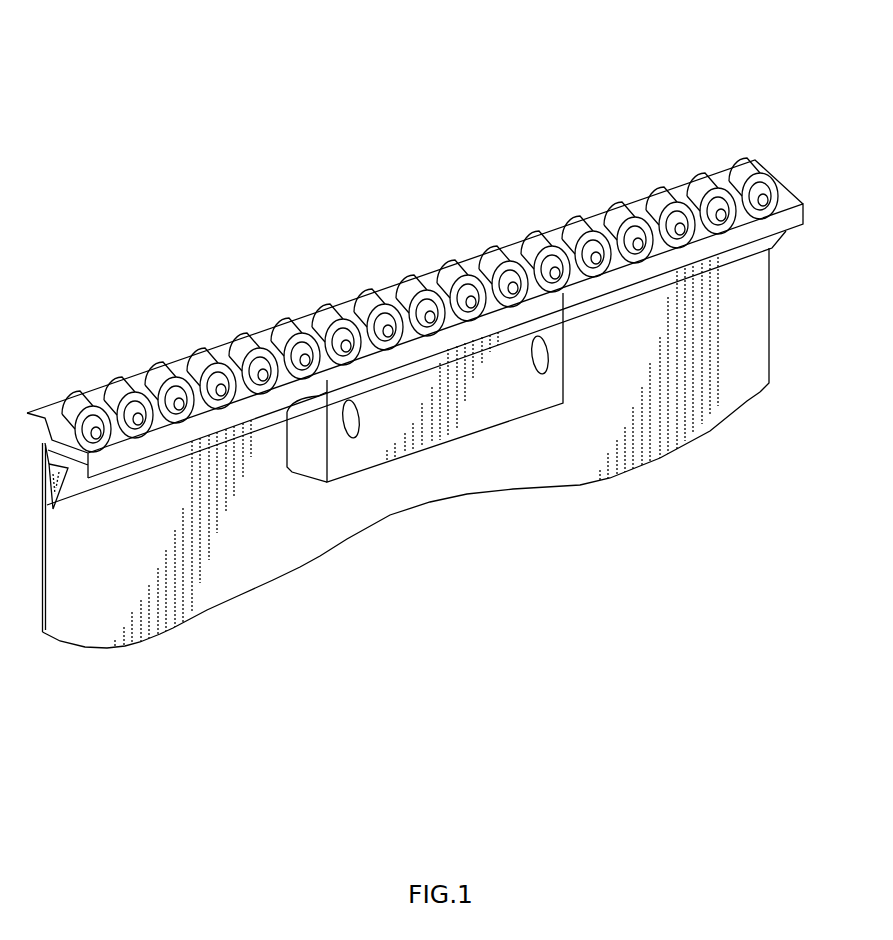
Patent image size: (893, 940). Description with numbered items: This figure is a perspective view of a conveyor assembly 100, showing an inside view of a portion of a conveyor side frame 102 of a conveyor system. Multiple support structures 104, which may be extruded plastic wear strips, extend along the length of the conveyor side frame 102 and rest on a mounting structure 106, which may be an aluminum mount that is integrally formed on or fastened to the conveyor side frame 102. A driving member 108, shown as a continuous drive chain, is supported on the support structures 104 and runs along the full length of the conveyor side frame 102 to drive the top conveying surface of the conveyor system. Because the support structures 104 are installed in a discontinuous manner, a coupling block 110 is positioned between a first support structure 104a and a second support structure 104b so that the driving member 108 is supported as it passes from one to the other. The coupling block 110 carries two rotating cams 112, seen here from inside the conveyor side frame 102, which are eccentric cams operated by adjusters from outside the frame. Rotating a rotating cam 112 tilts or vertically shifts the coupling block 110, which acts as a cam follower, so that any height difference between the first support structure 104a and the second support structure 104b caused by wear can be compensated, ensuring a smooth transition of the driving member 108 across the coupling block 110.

The roller track assembly 100 is at (365, 70).
The conveyor side frame 102 is at (430, 467).
The support structures 104 is at (782, 203).
The first support structure 104a is at (200, 437).
The second support structure 104b is at (632, 285).
The mounting structure 106 is at (57, 495).
The driving member 108 is at (430, 266).
The coupling block 110 is at (483, 372).
The rotating cam 112 is at (545, 365).